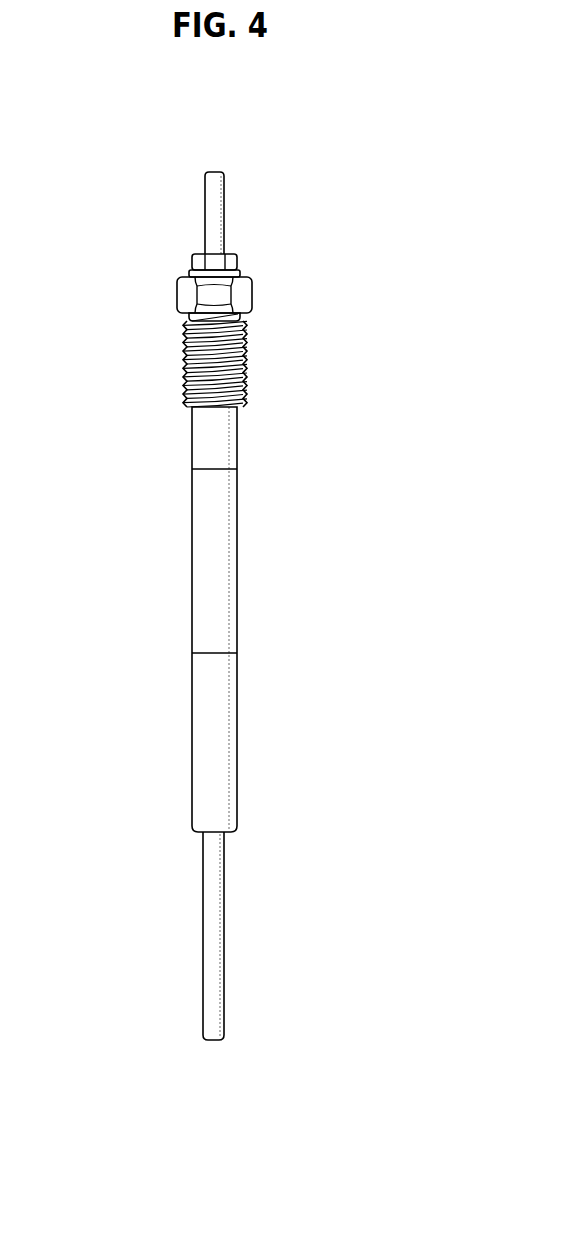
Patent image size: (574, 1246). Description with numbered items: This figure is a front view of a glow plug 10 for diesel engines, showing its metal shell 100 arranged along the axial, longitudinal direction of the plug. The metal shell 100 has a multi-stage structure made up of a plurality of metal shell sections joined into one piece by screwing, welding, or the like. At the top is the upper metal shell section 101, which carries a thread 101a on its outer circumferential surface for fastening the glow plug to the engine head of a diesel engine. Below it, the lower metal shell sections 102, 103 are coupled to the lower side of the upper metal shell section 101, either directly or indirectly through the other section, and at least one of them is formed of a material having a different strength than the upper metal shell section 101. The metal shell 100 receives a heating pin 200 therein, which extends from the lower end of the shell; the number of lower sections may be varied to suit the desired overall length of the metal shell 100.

The glow plug 10 is at (109, 248).
The metal shell 100 is at (325, 730).
The upper metal shell section 101 is at (263, 395).
The thread 101a is at (245, 342).
The lower metal shell section 102 is at (224, 578).
The lower metal shell section 103 is at (224, 735).
The heating pin 200 is at (213, 953).